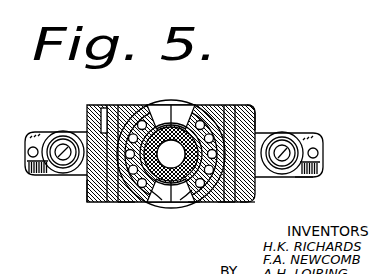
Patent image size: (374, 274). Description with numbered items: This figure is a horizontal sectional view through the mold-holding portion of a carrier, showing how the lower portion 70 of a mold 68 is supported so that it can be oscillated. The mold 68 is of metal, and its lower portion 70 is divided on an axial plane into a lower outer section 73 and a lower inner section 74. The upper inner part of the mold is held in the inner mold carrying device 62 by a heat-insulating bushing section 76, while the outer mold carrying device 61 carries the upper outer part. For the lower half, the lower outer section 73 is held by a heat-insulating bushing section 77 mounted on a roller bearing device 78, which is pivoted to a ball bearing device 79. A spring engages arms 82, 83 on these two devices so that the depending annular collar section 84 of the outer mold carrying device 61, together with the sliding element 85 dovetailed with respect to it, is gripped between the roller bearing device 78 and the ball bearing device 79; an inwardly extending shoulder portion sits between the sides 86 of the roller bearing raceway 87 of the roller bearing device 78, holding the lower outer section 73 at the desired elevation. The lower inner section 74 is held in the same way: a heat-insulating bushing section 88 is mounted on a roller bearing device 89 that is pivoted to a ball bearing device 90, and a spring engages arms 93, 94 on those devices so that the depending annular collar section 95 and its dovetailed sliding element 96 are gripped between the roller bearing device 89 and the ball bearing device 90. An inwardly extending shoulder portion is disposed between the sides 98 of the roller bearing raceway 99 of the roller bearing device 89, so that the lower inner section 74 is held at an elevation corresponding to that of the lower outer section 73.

The outer mold carrying device 61 is at (87, 128).
The inner mold carrying device 62 is at (257, 108).
The mold 68 is at (190, 117).
The lower portion of mold 70 is at (161, 205).
The lower outer section 73 is at (143, 205).
The lower inner section 74 is at (171, 206).
The bushing section 76 is at (199, 154).
The bushing section 77 is at (141, 121).
The roller bearing device 78 is at (72, 172).
The ball bearing device 79 is at (53, 132).
The arm 82 is at (32, 169).
The arm 83 is at (26, 150).
The depending annular collar section 84 is at (90, 188).
The sliding element 85 is at (110, 120).
The sides of roller bearing raceway 86 is at (124, 201).
The roller bearing raceway 87 is at (171, 112).
The bushing section 88 is at (191, 203).
The roller bearing device 89 is at (207, 107).
The ball bearing device 90 is at (302, 137).
The arm 93 is at (312, 170).
The arm 94 is at (318, 154).
The depending annular collar section 95 is at (253, 192).
The sliding element 96 is at (227, 204).
The sides of roller bearing raceway 98 is at (210, 133).
The roller bearing raceway 99 is at (229, 120).